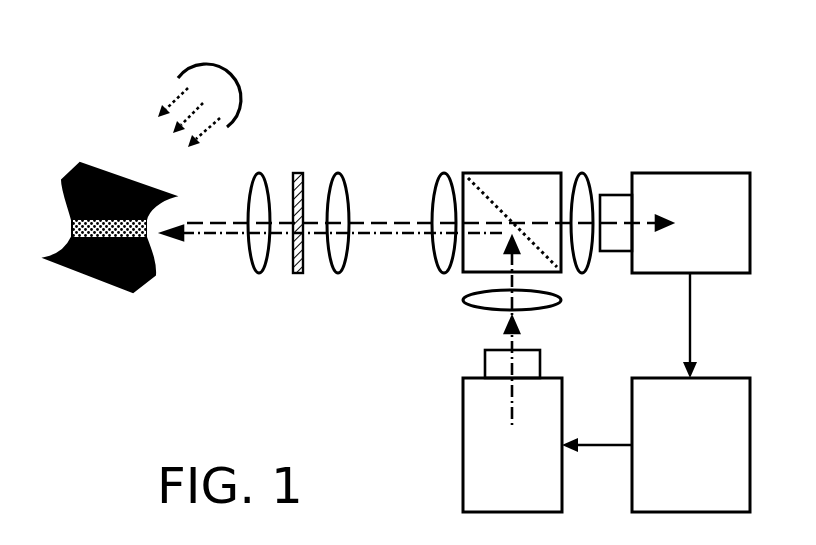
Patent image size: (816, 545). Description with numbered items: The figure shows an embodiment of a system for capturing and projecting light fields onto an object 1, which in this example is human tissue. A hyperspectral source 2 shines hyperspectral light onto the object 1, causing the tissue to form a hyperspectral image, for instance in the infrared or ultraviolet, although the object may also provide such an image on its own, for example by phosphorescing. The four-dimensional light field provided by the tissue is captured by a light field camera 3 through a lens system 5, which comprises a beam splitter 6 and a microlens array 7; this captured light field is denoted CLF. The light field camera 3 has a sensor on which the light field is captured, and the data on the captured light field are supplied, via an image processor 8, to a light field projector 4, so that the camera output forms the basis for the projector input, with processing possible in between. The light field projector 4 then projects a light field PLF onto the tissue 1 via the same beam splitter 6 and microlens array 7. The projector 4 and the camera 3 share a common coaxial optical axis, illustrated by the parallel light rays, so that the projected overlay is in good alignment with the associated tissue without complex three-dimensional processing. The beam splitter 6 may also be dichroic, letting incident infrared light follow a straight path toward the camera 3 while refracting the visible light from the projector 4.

The object 1 is at (80, 163).
The hyperspectral source 2 is at (210, 65).
The light field camera 3 is at (699, 236).
The light field projector 4 is at (521, 458).
The lens system 5 is at (259, 172).
The beam splitter 6 is at (517, 197).
The microlens array 7 is at (298, 172).
The image processor 8 is at (699, 458).
The projected light field PLF is at (393, 236).
The captured light field CLF is at (615, 212).